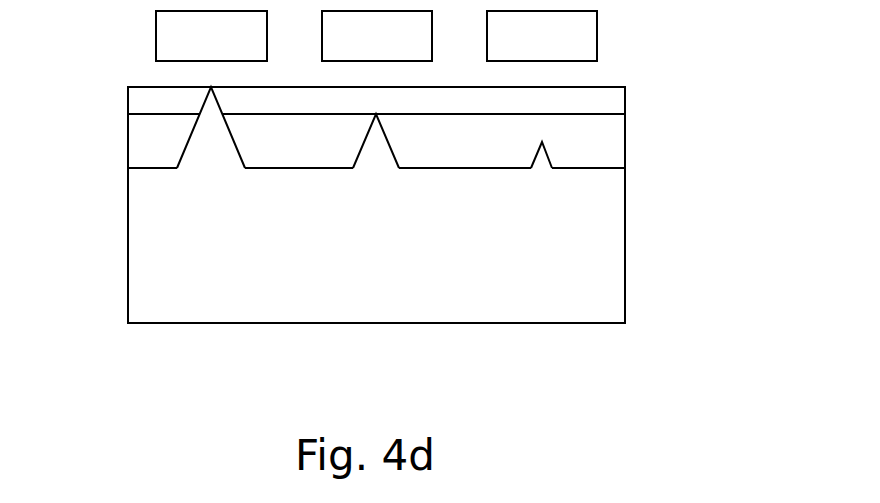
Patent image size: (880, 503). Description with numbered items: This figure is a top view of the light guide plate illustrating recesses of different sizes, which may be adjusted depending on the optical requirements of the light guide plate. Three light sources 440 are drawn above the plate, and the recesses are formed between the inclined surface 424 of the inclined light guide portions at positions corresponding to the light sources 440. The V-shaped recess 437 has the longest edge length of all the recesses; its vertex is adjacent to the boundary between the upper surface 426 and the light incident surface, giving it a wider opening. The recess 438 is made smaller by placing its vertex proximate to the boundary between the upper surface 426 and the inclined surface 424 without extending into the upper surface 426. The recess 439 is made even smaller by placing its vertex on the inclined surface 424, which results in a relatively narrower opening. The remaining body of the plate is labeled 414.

The substrate 414 is at (138, 278).
The inclined surface 424 is at (140, 145).
The upper surface 426 is at (140, 100).
The V-shaped recess 437 is at (212, 155).
The recess 438 is at (377, 157).
The recess 439 is at (542, 165).
The light source 440 is at (168, 33).